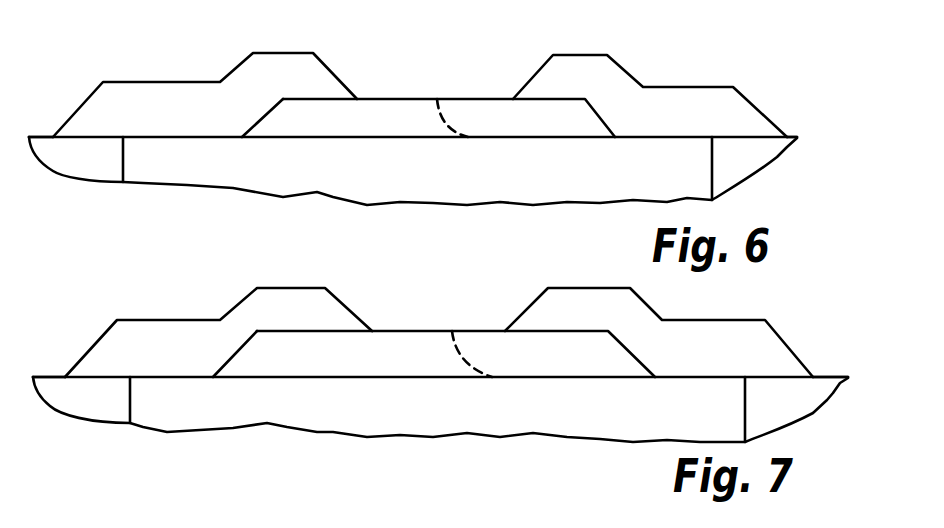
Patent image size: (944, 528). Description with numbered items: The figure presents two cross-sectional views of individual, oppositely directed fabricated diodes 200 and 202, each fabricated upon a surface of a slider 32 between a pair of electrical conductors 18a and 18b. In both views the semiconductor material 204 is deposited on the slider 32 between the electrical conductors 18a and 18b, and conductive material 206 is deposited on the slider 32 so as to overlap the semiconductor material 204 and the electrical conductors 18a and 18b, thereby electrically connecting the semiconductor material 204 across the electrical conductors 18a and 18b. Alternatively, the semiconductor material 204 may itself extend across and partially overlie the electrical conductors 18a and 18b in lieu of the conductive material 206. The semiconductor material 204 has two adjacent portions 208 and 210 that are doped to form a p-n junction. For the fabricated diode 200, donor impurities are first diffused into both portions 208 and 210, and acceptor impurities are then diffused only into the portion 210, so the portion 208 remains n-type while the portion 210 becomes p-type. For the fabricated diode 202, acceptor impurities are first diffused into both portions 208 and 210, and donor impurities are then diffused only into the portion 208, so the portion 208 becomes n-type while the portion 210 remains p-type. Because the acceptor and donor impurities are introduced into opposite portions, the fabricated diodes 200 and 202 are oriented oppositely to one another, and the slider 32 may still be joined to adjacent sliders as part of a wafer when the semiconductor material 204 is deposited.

In FIG. 6, the electrical conductor 18a is at (40, 135).
In FIG. 7, the electrical conductor 18a is at (53, 375).
In FIG. 6, the electrical conductor 18b is at (797, 134).
In FIG. 7, the electrical conductor 18b is at (830, 377).
In FIG. 6, the slider 32 is at (451, 179).
In FIG. 7, the slider 32 is at (353, 418).
In FIG. 6, the fabricated diode 200 is at (631, 66).
In FIG. 7, the fabricated diode 202 is at (656, 306).
In FIG. 6, the semiconductor material 204 is at (481, 98).
In FIG. 7, the semiconductor material 204 is at (385, 330).
In FIG. 6, the conductive material 206 is at (172, 80).
In FIG. 7, the conductive material 206 is at (178, 320).
In FIG. 6, the portion of semiconductor material 208 is at (370, 97).
In FIG. 7, the portion of semiconductor material 208 is at (407, 382).
In FIG. 6, the portion of semiconductor material 210 is at (502, 98).
In FIG. 7, the portion of semiconductor material 210 is at (518, 382).